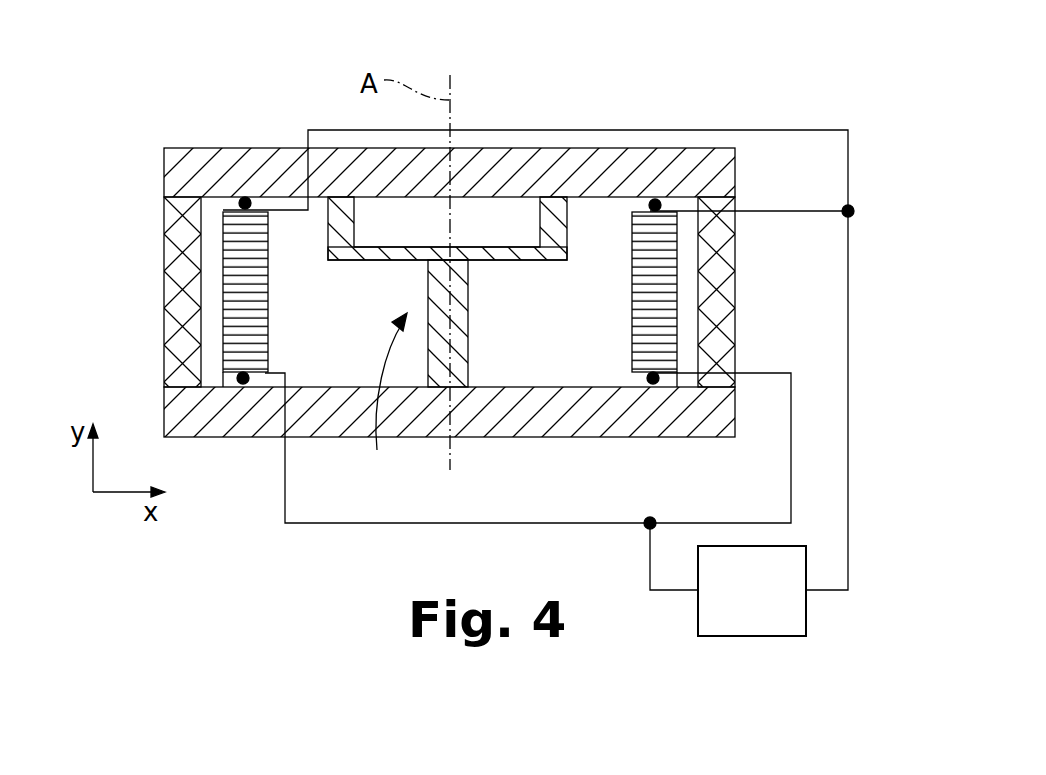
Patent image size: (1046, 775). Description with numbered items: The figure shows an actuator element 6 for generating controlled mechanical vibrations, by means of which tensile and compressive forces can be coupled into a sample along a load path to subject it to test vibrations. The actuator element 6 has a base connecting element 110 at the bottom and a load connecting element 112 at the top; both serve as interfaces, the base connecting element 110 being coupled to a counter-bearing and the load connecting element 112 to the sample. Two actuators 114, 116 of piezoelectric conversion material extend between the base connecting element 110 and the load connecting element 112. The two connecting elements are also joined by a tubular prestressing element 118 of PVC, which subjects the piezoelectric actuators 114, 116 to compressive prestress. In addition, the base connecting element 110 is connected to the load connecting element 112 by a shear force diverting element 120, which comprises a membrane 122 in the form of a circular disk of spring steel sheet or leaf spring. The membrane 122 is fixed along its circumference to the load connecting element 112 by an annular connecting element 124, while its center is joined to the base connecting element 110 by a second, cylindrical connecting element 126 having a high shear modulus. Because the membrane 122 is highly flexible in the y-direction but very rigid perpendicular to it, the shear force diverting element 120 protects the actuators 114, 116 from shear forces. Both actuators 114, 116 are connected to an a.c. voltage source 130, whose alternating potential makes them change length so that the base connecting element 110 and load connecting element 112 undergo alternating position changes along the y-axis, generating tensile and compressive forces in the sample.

The actuator element 6 is at (730, 95).
The base connecting element 110 is at (220, 420).
The load connecting element 112 is at (600, 168).
The piezoelectric actuator 114 is at (247, 250).
The piezoelectric actuator 116 is at (647, 350).
The tubular prestressing element 118 is at (177, 310).
The shear force diverting element 120 is at (379, 410).
The membrane 122 is at (483, 247).
The annular connecting element 124 is at (343, 210).
The cylindrical connecting element 126 is at (453, 362).
The a.c. voltage source 130 is at (768, 613).